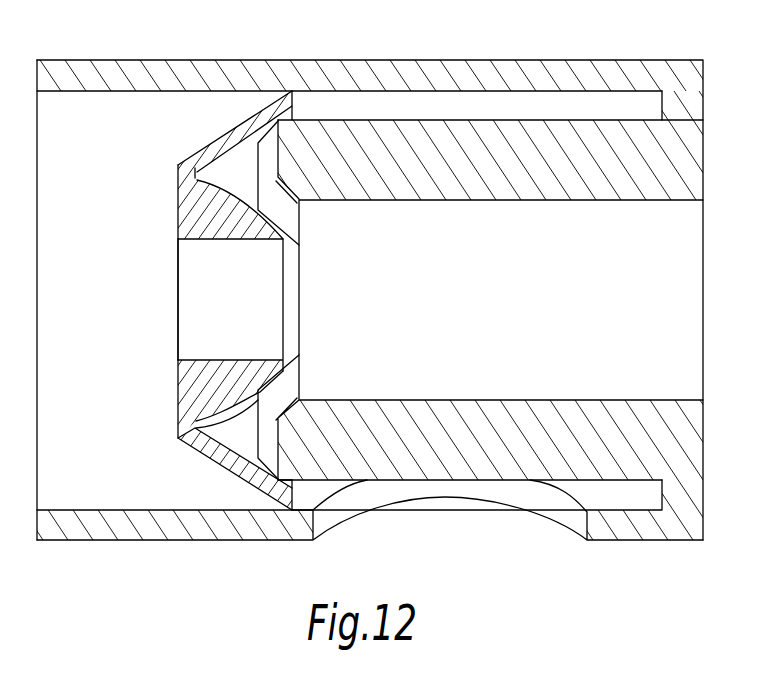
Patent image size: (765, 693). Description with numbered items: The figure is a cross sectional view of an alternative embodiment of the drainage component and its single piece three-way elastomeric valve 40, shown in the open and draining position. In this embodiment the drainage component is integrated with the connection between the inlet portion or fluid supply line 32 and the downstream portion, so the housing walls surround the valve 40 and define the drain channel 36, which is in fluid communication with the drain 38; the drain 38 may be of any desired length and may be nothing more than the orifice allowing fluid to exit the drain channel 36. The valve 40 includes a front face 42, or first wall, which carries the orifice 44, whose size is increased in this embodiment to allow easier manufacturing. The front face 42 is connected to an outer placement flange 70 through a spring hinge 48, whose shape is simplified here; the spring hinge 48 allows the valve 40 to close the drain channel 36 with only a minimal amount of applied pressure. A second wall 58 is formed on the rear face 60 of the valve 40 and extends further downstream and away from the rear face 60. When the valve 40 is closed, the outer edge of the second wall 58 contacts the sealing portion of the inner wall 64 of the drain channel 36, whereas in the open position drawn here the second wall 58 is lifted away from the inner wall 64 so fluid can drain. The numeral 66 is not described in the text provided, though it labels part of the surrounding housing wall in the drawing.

The fluid supply line 32 is at (106, 309).
The drain channel 36 is at (597, 108).
The drain 38 is at (453, 546).
The elastomeric valve 40 is at (208, 455).
The front face 42 is at (178, 386).
The orifice 44 is at (216, 309).
The spring hinge 48 is at (197, 178).
The second wall 58 is at (208, 233).
The rear face 60 is at (260, 396).
The inner wall 64 is at (453, 176).
The housing wall 66 is at (485, 70).
The outer placement flange 70 is at (286, 97).